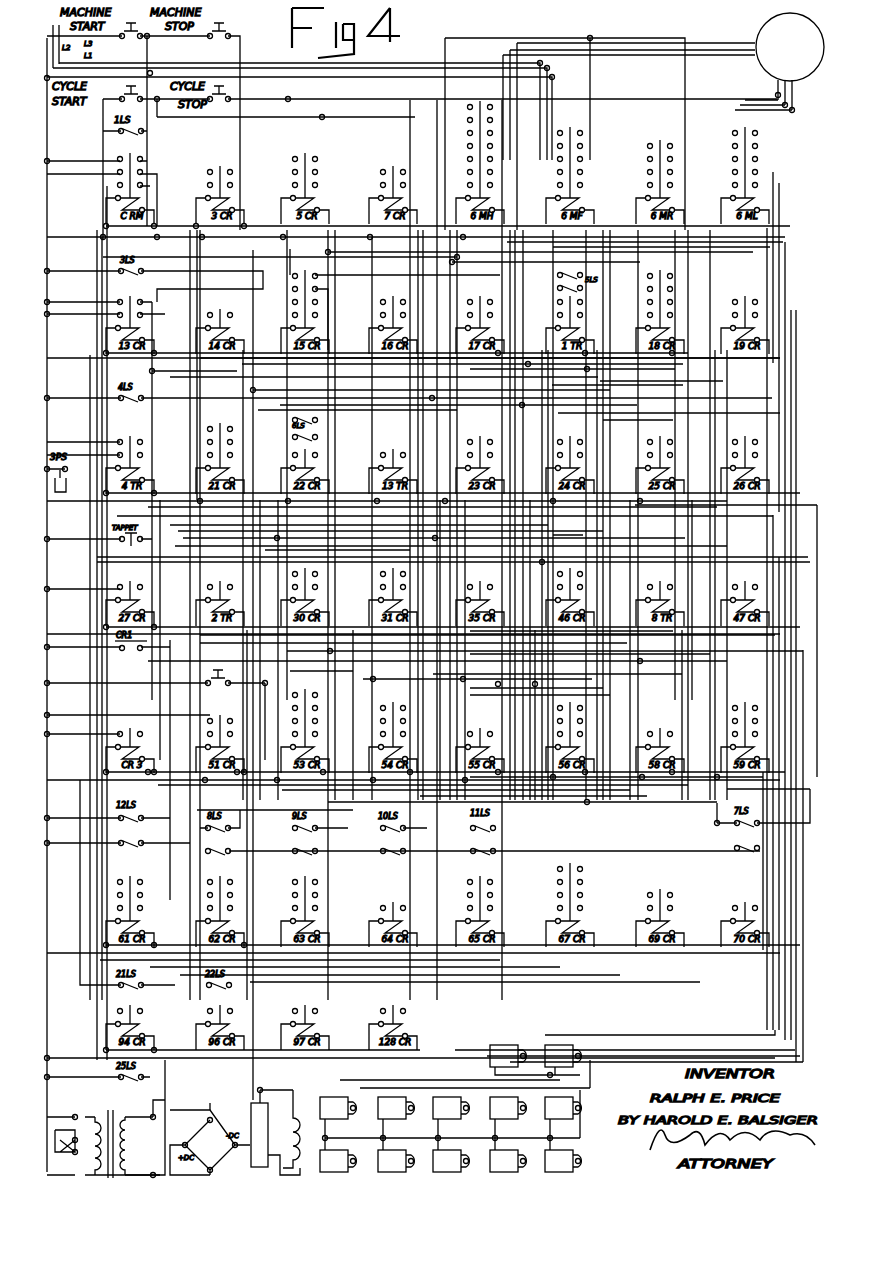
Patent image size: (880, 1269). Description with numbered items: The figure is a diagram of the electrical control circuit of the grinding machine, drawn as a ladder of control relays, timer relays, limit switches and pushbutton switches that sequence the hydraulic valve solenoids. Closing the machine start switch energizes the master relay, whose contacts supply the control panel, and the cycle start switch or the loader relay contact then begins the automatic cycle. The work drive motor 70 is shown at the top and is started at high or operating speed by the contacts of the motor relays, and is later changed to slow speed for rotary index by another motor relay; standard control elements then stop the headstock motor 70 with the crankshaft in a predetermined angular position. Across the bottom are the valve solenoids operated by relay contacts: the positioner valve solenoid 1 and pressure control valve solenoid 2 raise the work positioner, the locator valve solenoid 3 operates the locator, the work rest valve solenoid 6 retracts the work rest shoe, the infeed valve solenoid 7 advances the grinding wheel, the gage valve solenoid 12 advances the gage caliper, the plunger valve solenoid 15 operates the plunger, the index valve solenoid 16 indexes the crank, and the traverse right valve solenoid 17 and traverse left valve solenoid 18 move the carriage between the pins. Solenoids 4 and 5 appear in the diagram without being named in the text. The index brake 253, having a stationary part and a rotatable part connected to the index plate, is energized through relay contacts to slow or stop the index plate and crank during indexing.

The work drive motor 70 is at (758, 30).
The index brake 253 is at (302, 1118).
The positioner valve solenoid 1 is at (508, 1056).
The pressure control valve solenoid 2 is at (563, 1056).
The locator valve solenoid 3 is at (338, 1161).
The solenoid 4 is at (563, 1161).
The solenoid 5 is at (338, 1108).
The work rest valve solenoid 6 is at (563, 1108).
The infeed valve solenoid 7 is at (451, 1161).
The gage valve solenoid 12 is at (508, 1108).
The plunger valve solenoid 15 is at (508, 1161).
The index valve solenoid 16 is at (396, 1108).
The traverse right valve solenoid 17 is at (396, 1161).
The traverse left valve solenoid 18 is at (451, 1108).